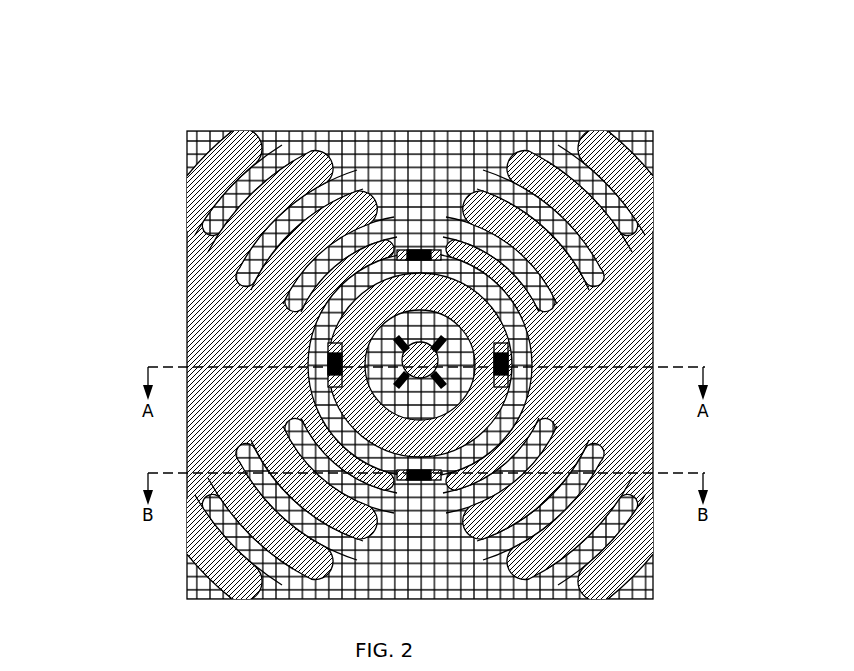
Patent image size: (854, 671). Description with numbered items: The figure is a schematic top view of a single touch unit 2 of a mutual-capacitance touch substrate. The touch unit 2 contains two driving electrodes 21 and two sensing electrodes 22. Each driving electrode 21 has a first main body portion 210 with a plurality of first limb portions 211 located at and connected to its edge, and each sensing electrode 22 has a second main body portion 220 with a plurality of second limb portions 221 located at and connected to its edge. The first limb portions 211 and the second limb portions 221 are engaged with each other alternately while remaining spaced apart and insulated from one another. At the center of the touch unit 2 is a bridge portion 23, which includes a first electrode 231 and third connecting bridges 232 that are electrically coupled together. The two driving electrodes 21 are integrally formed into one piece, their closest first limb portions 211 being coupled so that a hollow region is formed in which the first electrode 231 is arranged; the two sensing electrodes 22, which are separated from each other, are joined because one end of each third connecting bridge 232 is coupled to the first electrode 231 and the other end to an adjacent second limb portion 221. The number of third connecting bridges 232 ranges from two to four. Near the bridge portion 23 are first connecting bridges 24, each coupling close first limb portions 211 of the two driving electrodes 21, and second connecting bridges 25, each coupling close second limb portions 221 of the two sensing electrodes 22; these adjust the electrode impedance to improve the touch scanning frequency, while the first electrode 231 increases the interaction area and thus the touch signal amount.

The touch unit 2 is at (653, 102).
The driving electrode 21 is at (351, 365).
The first main body portion 210 is at (84, 200).
The first limb portions 211 is at (272, 207).
The sensing electrode 22 is at (420, 349).
The second main body portion 220 is at (429, 165).
The second limb portions 221 is at (555, 218).
The bridge portion 23 is at (400, 252).
The first electrode 231 is at (418, 352).
The third connecting bridges 232 is at (416, 352).
The first connecting bridges 24 is at (419, 250).
The second connecting bridges 25 is at (507, 352).